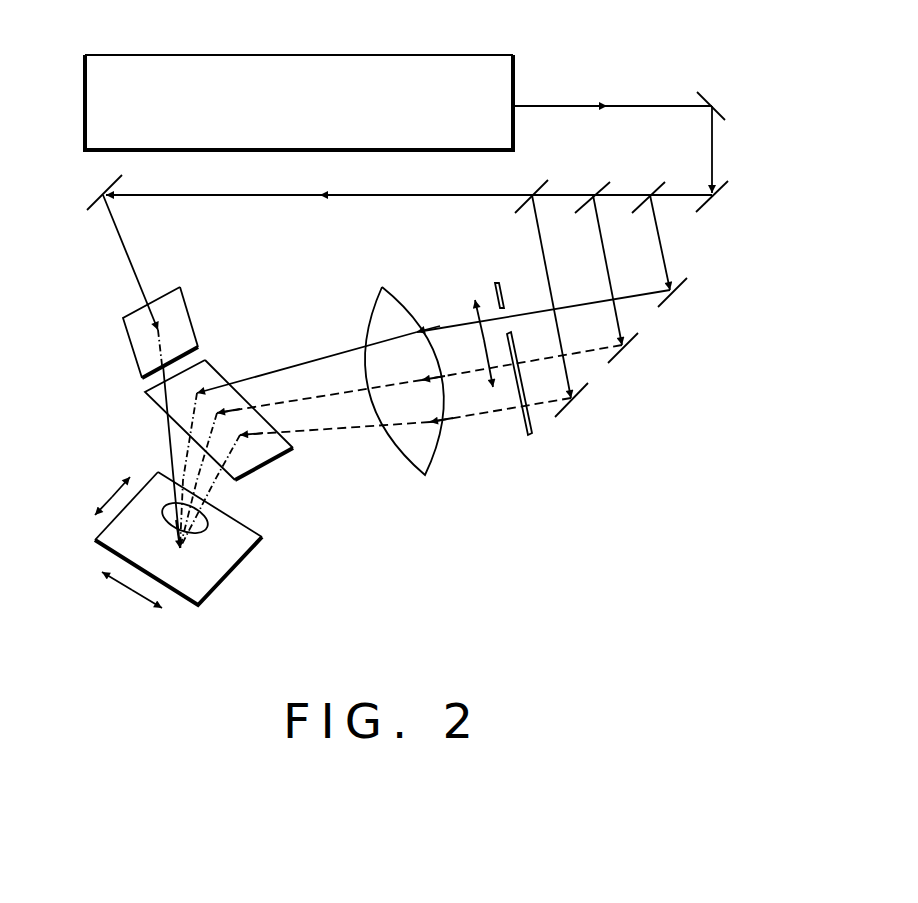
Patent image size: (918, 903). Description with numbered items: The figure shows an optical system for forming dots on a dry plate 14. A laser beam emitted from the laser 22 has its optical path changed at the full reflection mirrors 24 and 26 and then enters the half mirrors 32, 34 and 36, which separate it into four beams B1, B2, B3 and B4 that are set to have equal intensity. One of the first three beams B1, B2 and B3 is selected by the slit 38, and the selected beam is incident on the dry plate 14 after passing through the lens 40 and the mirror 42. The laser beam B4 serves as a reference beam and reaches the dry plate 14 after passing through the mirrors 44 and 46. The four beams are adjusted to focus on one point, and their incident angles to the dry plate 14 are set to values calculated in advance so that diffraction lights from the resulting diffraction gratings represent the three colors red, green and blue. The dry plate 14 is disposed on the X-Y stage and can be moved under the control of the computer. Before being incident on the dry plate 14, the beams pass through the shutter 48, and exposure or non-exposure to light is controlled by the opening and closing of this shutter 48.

The laser 22 is at (323, 55).
The full reflection mirror 24 is at (724, 112).
The full reflection mirror 26 is at (718, 201).
The half mirror 32 is at (648, 191).
The half mirror 34 is at (592, 190).
The half mirror 36 is at (532, 192).
The slit 38 is at (525, 428).
The lens 40 is at (397, 302).
The mirror 42 is at (223, 376).
The mirror 44 is at (97, 200).
The mirror 46 is at (135, 347).
The shutter 48 is at (208, 519).
The dry plate 14 is at (242, 548).
The laser beam B1 is at (425, 419).
The laser beam B2 is at (401, 446).
The laser beam B3 is at (375, 473).
The reference beam B4 is at (141, 371).